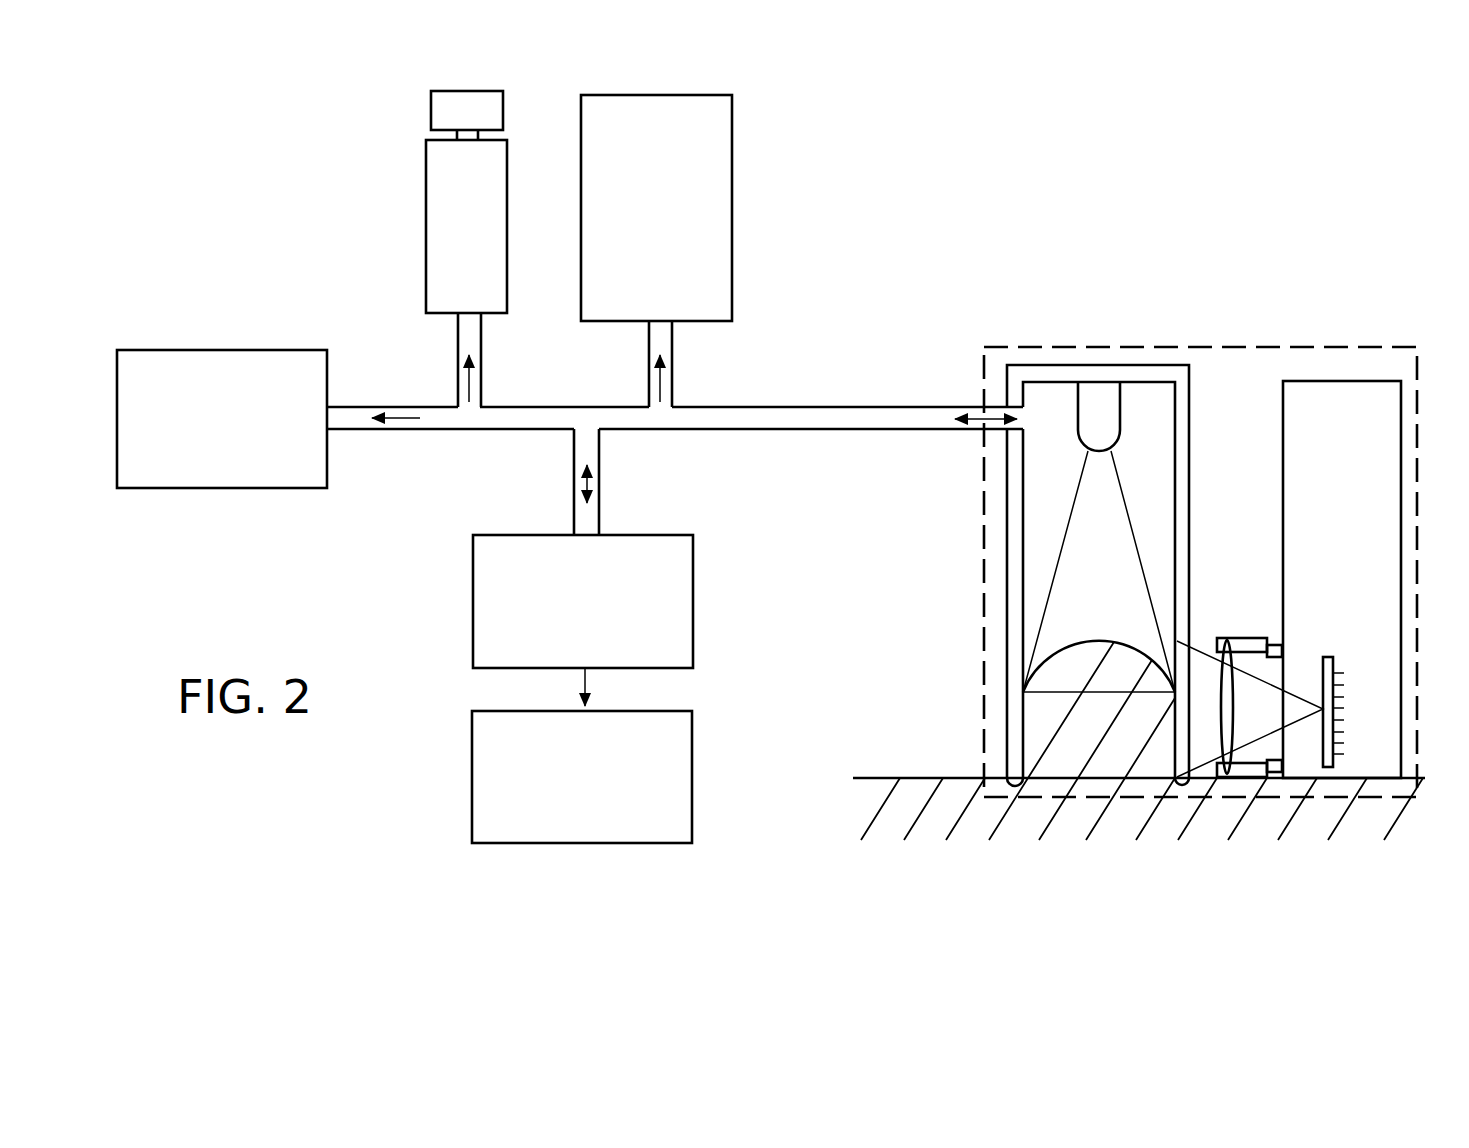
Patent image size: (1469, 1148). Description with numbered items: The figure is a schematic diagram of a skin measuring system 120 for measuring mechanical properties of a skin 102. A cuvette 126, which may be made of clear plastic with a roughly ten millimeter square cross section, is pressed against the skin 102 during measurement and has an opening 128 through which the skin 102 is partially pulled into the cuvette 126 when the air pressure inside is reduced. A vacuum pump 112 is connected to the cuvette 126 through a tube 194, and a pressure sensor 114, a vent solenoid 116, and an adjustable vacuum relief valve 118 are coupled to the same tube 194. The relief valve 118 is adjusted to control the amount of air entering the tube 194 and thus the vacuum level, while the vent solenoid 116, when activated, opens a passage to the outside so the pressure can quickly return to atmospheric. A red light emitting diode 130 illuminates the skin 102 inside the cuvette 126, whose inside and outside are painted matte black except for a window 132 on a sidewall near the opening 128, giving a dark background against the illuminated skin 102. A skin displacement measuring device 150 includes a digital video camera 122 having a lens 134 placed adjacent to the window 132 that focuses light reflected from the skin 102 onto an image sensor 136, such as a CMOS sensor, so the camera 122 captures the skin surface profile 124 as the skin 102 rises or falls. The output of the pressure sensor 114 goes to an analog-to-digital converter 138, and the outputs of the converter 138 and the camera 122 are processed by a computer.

The skin 102 is at (1045, 720).
The vacuum pump 112 is at (225, 488).
The pressure sensor 114 is at (693, 574).
The vent solenoid 116 is at (667, 95).
The adjustable vacuum relief valve 118 is at (474, 91).
The skin measuring system 120 is at (1044, 220).
The digital video camera 122 is at (1360, 381).
The skin surface profile 124 is at (1093, 640).
The cuvette 126 is at (1136, 370).
The opening 128 is at (1143, 780).
The red light emitting diode 130 is at (1134, 412).
The window 132 is at (1193, 740).
The lens 134 is at (1226, 632).
The image sensor 136 is at (1354, 709).
The analog-to-digital converter 138 is at (693, 738).
The skin displacement measuring device 150 is at (1320, 347).
The tube 194 is at (822, 407).